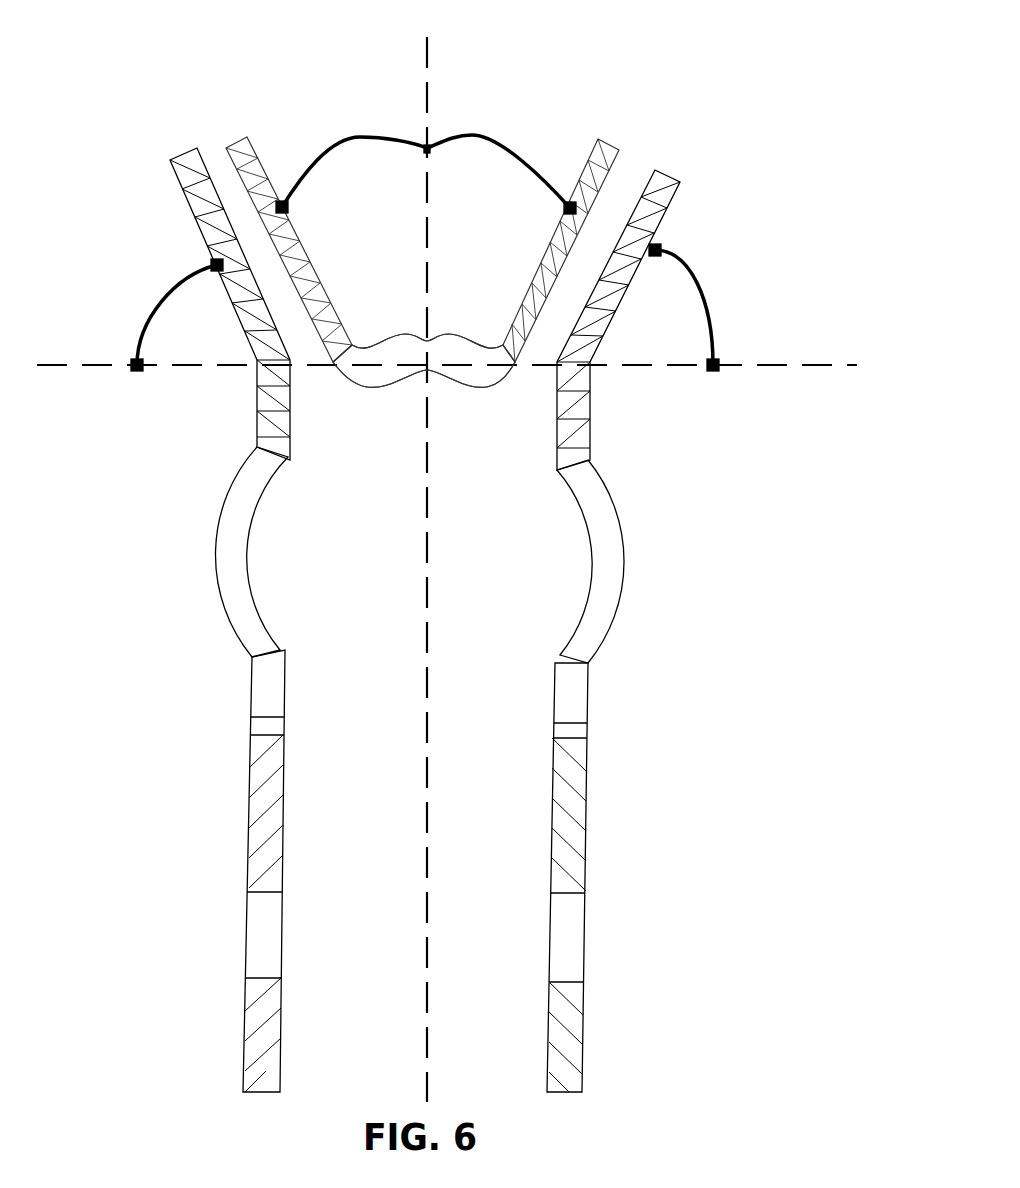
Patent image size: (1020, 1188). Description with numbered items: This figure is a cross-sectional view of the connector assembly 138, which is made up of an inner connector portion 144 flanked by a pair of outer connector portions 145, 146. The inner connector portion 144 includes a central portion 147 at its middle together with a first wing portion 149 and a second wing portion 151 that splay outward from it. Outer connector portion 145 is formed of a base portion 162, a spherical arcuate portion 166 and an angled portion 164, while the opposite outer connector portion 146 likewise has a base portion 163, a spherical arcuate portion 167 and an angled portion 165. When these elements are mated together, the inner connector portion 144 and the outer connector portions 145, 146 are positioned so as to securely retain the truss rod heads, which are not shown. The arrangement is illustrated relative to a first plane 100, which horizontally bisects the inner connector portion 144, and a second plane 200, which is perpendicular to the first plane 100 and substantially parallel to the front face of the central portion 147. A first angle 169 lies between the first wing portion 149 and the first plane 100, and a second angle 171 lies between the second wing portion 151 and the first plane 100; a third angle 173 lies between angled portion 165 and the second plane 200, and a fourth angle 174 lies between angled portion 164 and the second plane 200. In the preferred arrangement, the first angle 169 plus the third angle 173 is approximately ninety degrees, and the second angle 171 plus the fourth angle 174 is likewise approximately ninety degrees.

The first plane 100 is at (432, 72).
The second plane 200 is at (788, 356).
The connector assembly 138 is at (441, 576).
The inner connector portion 144 is at (479, 392).
The outer connector portion 145 is at (697, 601).
The outer connector portion 146 is at (162, 615).
The central portion 147 is at (366, 382).
The first wing portion 149 is at (233, 132).
The second wing portion 151 is at (619, 166).
The base portion 162 is at (600, 773).
The base portion 163 is at (236, 812).
The angled portion 164 is at (672, 178).
The angled portion 165 is at (167, 161).
The spherical arcuate portion 166 is at (630, 535).
The spherical arcuate portion 167 is at (207, 572).
The first angle 169 is at (315, 148).
The second angle 171 is at (507, 136).
The third angle 173 is at (166, 295).
The fourth angle 174 is at (683, 255).